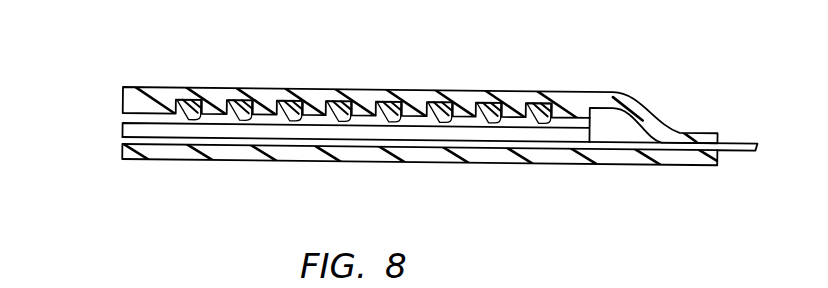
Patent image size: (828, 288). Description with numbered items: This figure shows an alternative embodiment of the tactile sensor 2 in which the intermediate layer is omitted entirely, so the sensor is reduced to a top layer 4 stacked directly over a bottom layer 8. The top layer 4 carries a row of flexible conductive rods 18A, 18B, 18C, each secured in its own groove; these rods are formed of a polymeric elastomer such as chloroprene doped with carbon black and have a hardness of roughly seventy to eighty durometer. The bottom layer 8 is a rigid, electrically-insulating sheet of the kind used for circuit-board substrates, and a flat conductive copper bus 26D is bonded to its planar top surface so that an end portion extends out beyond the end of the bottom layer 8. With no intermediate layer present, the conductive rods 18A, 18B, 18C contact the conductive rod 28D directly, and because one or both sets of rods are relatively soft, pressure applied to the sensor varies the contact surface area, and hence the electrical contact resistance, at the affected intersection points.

The tactile sensor 2 is at (184, 72).
The top layer 4 is at (116, 102).
The bottom layer 8 is at (116, 148).
The conductive rod 18A is at (546, 110).
The conductive rod 18B is at (497, 110).
The conductive rod 18C is at (446, 108).
The conductive copper bus 26D is at (178, 143).
The conductive rod 28D is at (517, 137).